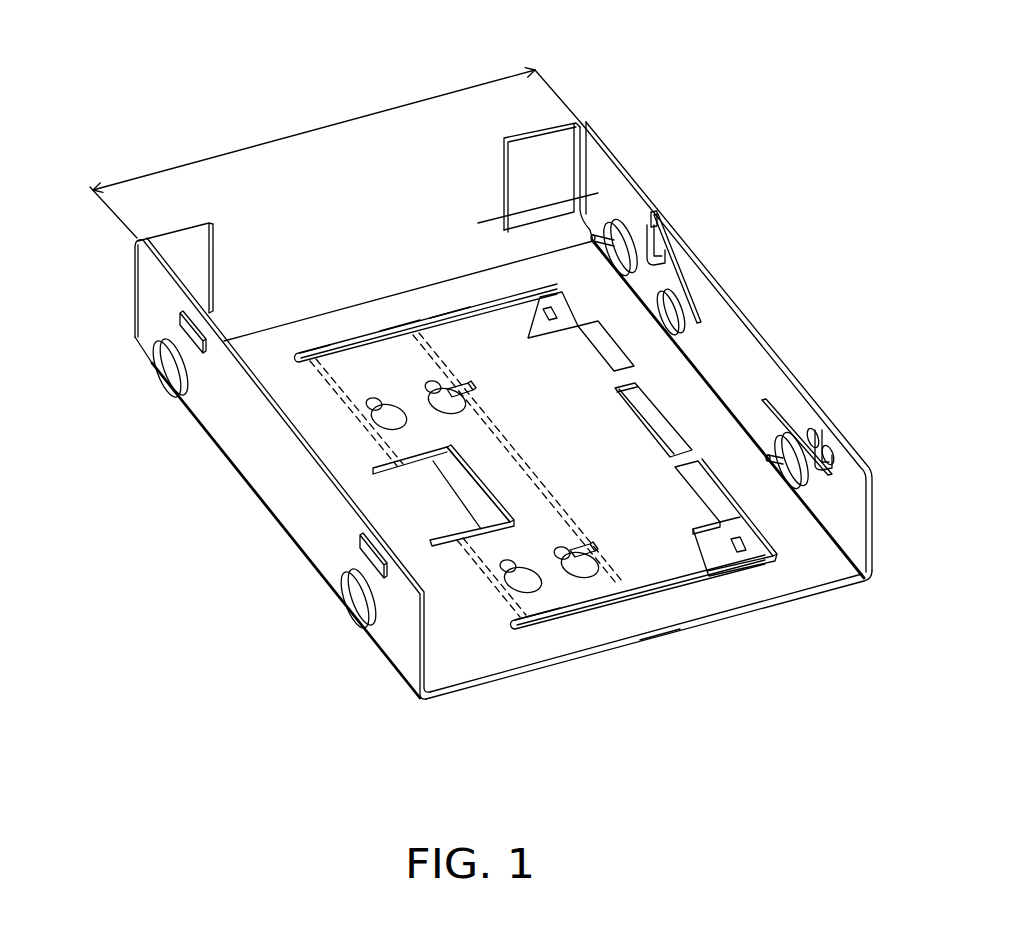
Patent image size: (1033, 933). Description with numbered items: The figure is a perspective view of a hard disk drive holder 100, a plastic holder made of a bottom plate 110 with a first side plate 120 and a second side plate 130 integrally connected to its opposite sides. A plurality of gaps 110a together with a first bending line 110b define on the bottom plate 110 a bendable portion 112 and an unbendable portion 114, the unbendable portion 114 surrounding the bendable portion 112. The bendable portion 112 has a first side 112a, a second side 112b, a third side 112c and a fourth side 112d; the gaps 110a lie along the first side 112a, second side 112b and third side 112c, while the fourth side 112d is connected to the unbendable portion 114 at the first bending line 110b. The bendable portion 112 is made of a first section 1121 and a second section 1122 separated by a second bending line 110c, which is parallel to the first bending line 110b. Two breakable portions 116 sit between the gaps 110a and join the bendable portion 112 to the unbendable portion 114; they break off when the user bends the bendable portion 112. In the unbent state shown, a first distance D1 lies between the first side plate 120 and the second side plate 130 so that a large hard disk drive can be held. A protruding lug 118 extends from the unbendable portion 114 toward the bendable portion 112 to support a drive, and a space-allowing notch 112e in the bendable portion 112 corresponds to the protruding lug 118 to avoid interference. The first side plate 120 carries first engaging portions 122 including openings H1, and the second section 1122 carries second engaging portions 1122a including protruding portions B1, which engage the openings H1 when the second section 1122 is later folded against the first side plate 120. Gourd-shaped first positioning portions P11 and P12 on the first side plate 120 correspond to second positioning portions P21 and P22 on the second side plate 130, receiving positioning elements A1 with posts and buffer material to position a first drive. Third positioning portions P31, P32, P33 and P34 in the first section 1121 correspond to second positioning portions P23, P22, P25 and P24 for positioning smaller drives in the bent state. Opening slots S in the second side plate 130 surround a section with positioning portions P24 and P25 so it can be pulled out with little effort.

The hard disk drive holder 100 is at (880, 800).
The bottom plate 110 is at (350, 302).
The gaps 110a is at (450, 313).
The first bending line 110b is at (330, 378).
The second bending line 110c is at (660, 590).
The bendable portion 112 is at (767, 63).
The first section 1121 is at (470, 440).
The second section 1122 is at (612, 422).
The second engaging portion 1122a is at (540, 318).
The first side 112a is at (600, 652).
The second side 112b is at (697, 497).
The third side 112c is at (400, 331).
The fourth side 112d is at (497, 606).
The space-allowing notch 112e is at (487, 487).
The unbendable portion 114 is at (827, 568).
The breakable portion 116 is at (612, 374).
The protruding lug 118 is at (437, 495).
The first side plate 120 is at (162, 303).
The first engaging portion 122 is at (160, 352).
The second side plate 130 is at (478, 223).
The positioning elements A1 is at (600, 245).
The protruding portions B1 is at (650, 212).
The first distance D1 is at (336, 154).
The openings H1 is at (212, 362).
The first positioning portion P11 is at (178, 388).
The first positioning portion P12 is at (352, 608).
The second positioning portion P21 is at (620, 272).
The second positioning portion P22 is at (778, 456).
The second positioning portion P23 is at (662, 317).
The second positioning portion P24 is at (660, 240).
The second positioning portion P25 is at (836, 435).
The third positioning portion P31 is at (385, 398).
The third positioning portion P32 is at (595, 544).
The third positioning portion P33 is at (474, 392).
The third positioning portion P34 is at (535, 563).
The opening slots S is at (657, 212).